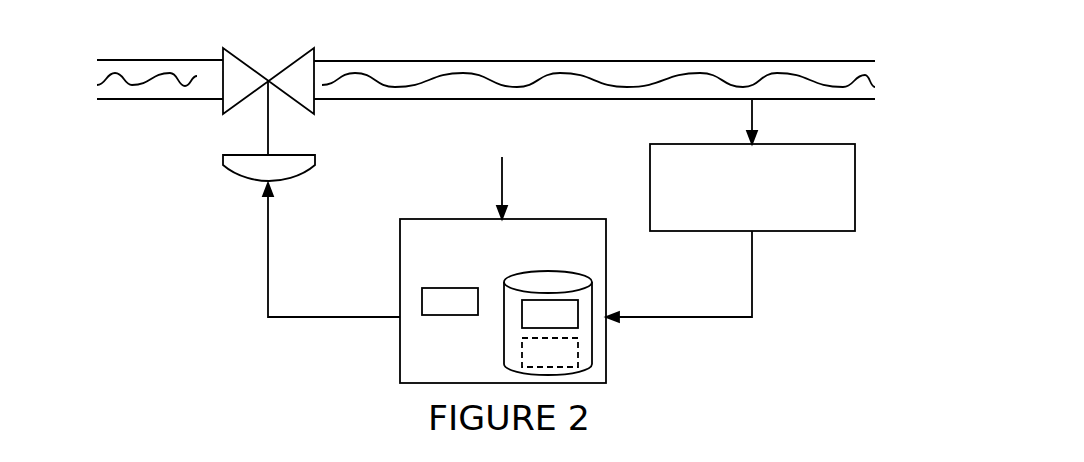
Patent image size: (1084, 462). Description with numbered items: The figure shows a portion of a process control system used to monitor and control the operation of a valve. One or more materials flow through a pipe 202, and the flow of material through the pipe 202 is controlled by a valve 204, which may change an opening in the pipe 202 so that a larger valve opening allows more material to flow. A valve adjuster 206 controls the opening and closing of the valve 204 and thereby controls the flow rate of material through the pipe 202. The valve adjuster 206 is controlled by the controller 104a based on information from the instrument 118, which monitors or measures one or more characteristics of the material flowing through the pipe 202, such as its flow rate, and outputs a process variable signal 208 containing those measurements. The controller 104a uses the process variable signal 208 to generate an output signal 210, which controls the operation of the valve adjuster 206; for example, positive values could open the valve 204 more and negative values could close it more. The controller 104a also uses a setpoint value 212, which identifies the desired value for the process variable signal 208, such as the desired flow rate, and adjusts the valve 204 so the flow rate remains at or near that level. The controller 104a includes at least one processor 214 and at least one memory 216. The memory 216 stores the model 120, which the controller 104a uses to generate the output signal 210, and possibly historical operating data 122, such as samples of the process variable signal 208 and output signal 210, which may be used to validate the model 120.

The pipe 202 is at (700, 61).
The valve 204 is at (303, 55).
The valve adjuster 206 is at (297, 179).
The output signal 210 is at (290, 318).
The controller 104a is at (400, 280).
The setpoint value 212 is at (503, 188).
The processor 214 is at (450, 301).
The memory 216 is at (504, 357).
The model 120 is at (550, 314).
The historical operating data 122 is at (550, 352).
The instrument 118 is at (650, 188).
The process variable signal 208 is at (727, 318).